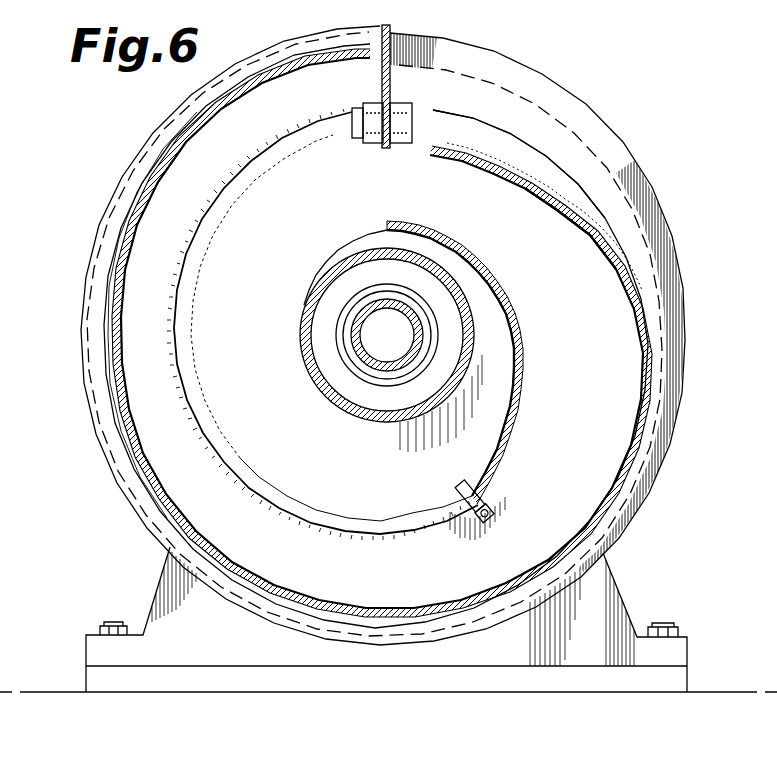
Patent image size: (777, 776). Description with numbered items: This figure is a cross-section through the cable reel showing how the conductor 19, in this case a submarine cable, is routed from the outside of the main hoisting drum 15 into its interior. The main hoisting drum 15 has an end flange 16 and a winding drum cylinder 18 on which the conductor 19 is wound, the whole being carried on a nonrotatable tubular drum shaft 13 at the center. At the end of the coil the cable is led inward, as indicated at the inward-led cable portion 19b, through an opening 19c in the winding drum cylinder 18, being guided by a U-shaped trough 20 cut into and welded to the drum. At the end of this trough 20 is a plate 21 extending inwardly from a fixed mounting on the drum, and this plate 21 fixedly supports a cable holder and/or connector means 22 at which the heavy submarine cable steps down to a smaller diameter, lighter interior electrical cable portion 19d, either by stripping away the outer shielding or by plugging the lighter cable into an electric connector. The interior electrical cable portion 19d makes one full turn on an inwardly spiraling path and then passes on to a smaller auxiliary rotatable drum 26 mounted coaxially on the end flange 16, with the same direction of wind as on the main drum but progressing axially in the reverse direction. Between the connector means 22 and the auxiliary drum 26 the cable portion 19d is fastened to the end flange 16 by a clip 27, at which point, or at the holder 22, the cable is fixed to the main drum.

The tubular drum shaft 13 is at (392, 376).
The main hoisting drum 15 is at (630, 151).
The end flange 16 is at (613, 323).
The winding drum cylinder 18 is at (287, 73).
The conductor 19 is at (100, 400).
The inward-led cable portion 19b is at (440, 110).
The opening 19c is at (638, 210).
The interior electrical cable portion 19d is at (229, 204).
The U-shaped trough 20 is at (578, 222).
The plate 21 is at (382, 80).
The cable holder and/or connector means 22 is at (407, 145).
The auxiliary rotatable drum 26 is at (338, 405).
The clip 27 is at (458, 490).